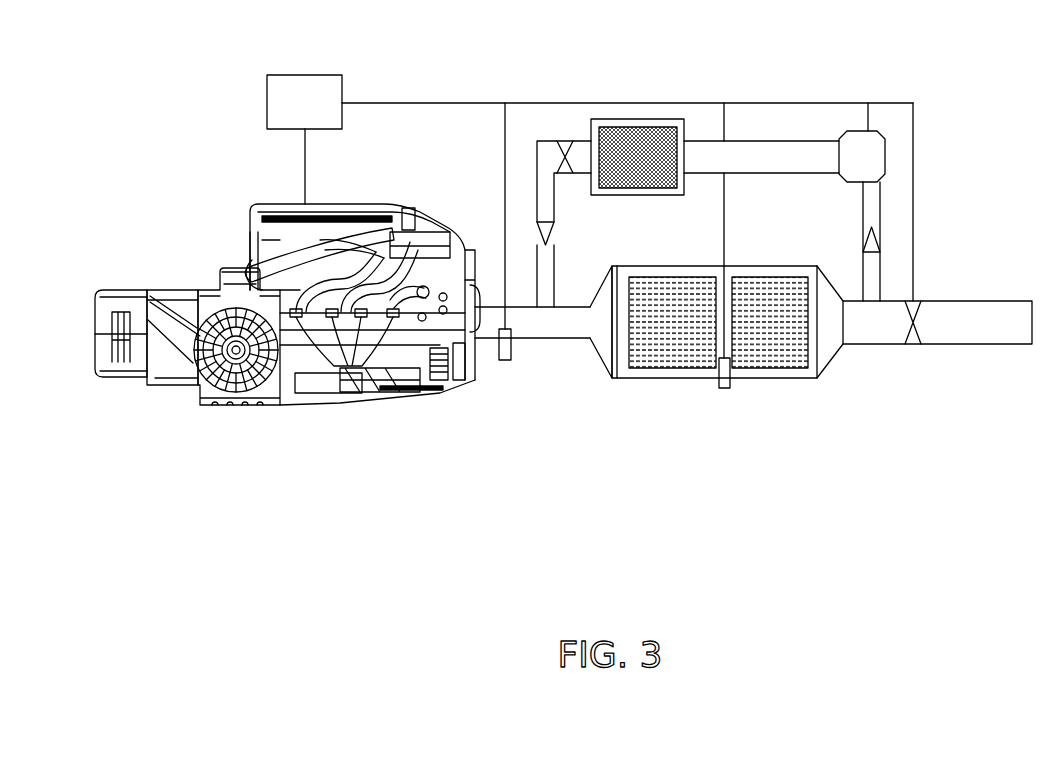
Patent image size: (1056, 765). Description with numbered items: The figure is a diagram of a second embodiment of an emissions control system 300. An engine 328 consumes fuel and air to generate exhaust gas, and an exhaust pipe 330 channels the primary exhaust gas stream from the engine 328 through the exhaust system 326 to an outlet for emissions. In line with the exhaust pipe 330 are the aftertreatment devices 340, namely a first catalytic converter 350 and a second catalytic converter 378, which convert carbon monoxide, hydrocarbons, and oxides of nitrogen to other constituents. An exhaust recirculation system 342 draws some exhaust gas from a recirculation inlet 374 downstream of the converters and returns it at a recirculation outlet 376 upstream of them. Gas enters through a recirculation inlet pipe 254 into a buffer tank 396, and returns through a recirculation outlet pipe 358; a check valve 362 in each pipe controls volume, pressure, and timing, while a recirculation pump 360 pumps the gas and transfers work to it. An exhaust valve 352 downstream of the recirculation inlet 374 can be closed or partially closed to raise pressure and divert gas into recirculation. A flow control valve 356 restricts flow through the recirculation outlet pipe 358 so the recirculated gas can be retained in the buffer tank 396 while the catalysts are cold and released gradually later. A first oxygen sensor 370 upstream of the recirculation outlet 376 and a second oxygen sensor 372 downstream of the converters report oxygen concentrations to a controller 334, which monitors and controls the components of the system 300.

The system 300 is at (188, 52).
The controller 334 is at (290, 113).
The engine 328 is at (229, 421).
The exhaust pipe 330 is at (551, 307).
The recirculation outlet 376 is at (557, 318).
The recirculation outlet pipe 358 is at (534, 163).
The flow control valve 356 is at (565, 141).
The check valve 362 is at (536, 232).
The buffer tank 396 is at (640, 119).
The exhaust recirculation system 342 is at (806, 141).
The recirculation pump 360 is at (870, 132).
The recirculation inlet pipe 254 is at (882, 215).
The first catalytic converter 350 is at (677, 368).
The second catalytic converter 378 is at (768, 275).
The first oxygen sensor 370 is at (505, 360).
The second oxygen sensor 372 is at (724, 388).
The recirculation inlet 374 is at (875, 303).
The exhaust valve 352 is at (913, 345).
The exhaust system 326 is at (1004, 345).
The aftertreatment devices 340 is at (533, 444).